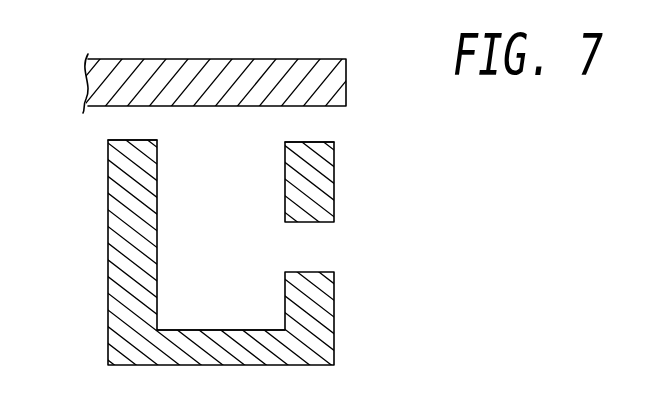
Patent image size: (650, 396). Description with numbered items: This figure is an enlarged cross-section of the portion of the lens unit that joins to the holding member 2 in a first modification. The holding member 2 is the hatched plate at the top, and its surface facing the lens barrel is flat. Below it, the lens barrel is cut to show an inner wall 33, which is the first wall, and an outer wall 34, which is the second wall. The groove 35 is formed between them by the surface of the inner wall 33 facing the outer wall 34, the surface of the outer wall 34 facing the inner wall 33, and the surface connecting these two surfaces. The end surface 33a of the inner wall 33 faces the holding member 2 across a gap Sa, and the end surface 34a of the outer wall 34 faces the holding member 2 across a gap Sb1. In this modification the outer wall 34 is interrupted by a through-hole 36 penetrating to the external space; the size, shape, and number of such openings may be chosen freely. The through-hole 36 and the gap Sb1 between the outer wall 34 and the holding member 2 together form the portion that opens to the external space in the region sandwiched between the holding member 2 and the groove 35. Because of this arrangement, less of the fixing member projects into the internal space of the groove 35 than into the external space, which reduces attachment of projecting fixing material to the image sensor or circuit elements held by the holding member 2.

The holding member 2 is at (208, 59).
The inner wall 33 is at (122, 245).
The end surface of first member 33a is at (134, 140).
The outer wall 34 is at (327, 185).
The end surface of second member 34a is at (306, 142).
The groove 35 is at (220, 330).
The through-hole 36 is at (313, 250).
The gap Sa is at (121, 125).
The gap Sb1 is at (313, 123).